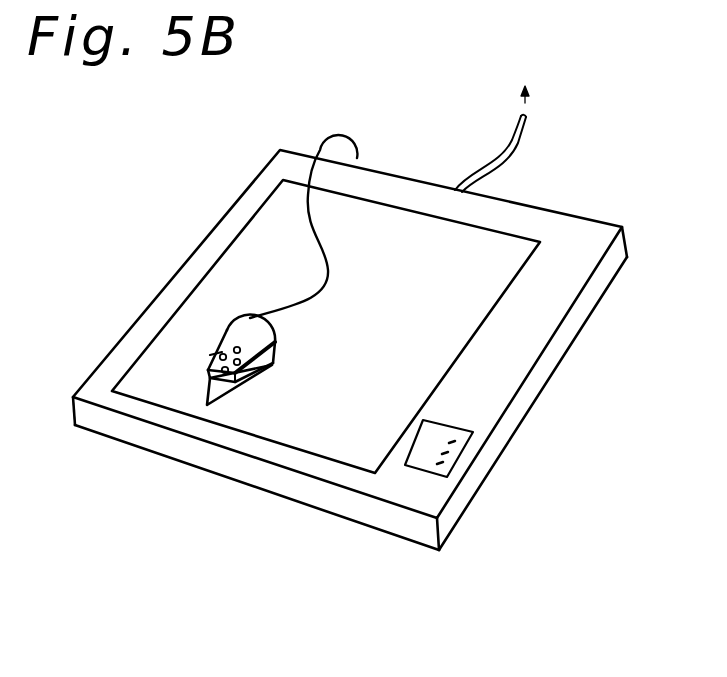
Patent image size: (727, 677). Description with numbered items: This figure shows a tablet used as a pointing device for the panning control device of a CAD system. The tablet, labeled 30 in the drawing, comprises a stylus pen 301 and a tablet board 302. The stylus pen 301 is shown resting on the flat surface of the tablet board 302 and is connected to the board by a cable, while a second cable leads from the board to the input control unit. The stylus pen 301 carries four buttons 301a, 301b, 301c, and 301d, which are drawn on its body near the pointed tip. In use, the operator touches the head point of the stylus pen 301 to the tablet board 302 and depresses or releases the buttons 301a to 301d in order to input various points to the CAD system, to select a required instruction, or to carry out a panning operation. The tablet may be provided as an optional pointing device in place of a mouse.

The input tablet 30 is at (143, 188).
The stylus pen 301 is at (277, 347).
The button 301a is at (240, 385).
The button 301b is at (210, 355).
The button 301c is at (253, 363).
The button 301d is at (240, 346).
The tablet board 302 is at (440, 495).